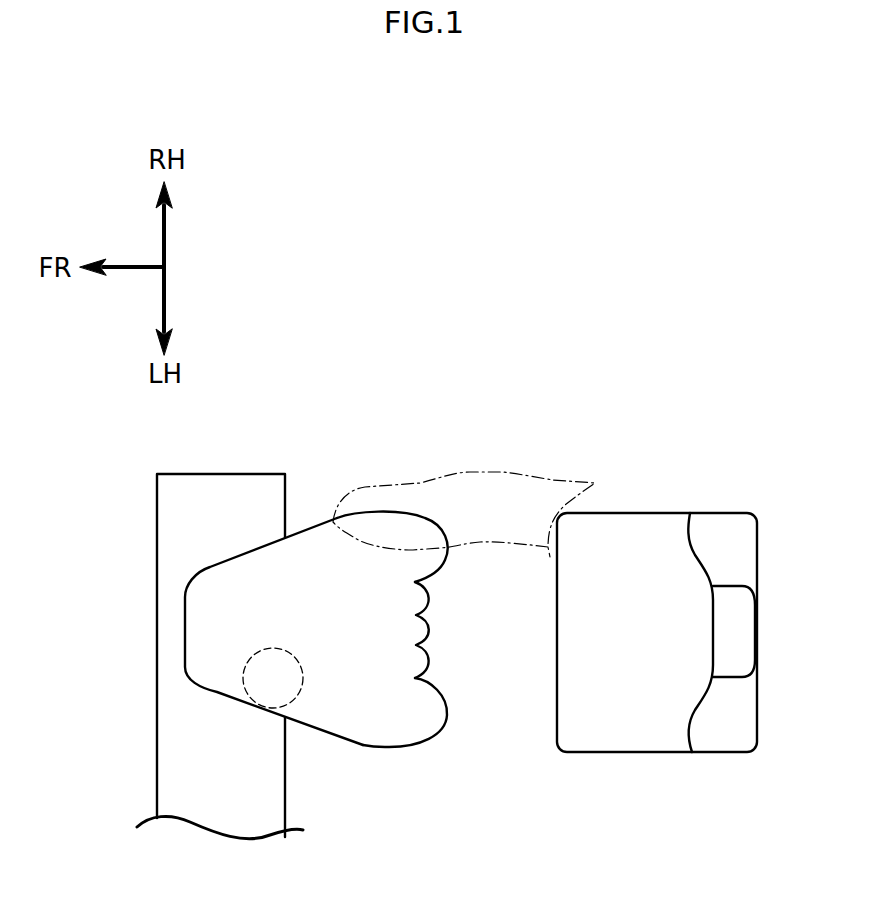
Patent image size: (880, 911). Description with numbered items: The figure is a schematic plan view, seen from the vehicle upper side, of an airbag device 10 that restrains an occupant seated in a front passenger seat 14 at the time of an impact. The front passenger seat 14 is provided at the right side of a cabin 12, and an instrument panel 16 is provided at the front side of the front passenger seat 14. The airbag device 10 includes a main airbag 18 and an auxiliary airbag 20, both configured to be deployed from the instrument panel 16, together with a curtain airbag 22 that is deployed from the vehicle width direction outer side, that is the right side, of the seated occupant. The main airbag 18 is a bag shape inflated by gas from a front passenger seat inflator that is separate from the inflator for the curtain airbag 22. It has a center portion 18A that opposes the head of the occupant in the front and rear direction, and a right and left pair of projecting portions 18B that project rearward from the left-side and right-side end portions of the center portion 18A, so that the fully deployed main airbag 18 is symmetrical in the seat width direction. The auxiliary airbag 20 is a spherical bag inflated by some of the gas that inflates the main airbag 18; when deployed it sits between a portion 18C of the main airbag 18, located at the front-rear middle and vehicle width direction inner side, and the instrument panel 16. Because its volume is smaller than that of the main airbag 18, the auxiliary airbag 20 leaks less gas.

The airbag device 10 is at (415, 448).
The cabin 12 is at (465, 834).
The front passenger seat 14 is at (737, 532).
The instrument panel 16 is at (237, 495).
The main airbag 18 is at (358, 679).
The center portion 18A is at (418, 622).
The projecting portions 18B is at (448, 555).
The portion of the main airbag 18C is at (263, 693).
The auxiliary airbag 20 is at (300, 693).
The curtain airbag 22 is at (530, 473).